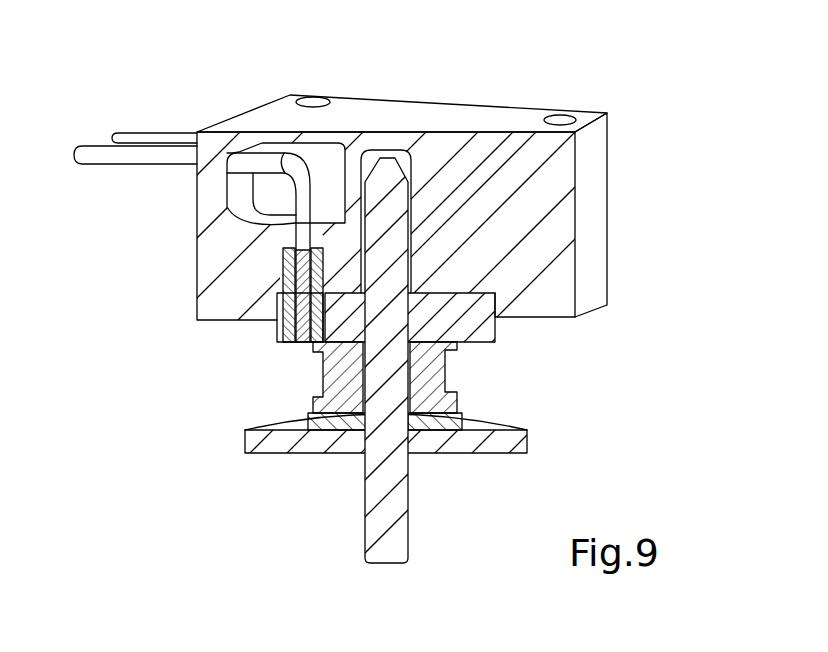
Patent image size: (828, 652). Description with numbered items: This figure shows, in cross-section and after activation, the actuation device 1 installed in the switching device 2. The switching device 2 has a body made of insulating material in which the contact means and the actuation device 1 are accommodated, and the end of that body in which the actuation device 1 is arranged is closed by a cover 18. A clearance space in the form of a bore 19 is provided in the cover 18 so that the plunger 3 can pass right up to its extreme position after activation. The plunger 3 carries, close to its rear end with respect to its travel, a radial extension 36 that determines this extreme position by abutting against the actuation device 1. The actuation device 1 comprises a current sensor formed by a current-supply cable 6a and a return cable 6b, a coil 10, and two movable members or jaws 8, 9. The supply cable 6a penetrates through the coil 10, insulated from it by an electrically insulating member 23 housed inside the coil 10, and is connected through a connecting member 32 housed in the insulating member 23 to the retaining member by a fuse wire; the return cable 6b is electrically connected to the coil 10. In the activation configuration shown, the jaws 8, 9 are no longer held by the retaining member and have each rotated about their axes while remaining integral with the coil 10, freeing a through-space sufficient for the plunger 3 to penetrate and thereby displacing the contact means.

The actuation device 1 is at (560, 387).
The switching device 2 is at (650, 126).
The plunger 3 is at (400, 517).
The wire or cable supplying current 6a is at (112, 158).
The return wire or cable 6b is at (165, 135).
The movable member or jaw 8 is at (328, 379).
The movable member or jaw 9 is at (432, 384).
The coil 10 is at (485, 327).
The cover 18 is at (553, 196).
The bore 19 is at (413, 168).
The electrically insulating member 23 is at (278, 331).
The connecting member 32 is at (282, 285).
The radial extension 36 is at (490, 452).